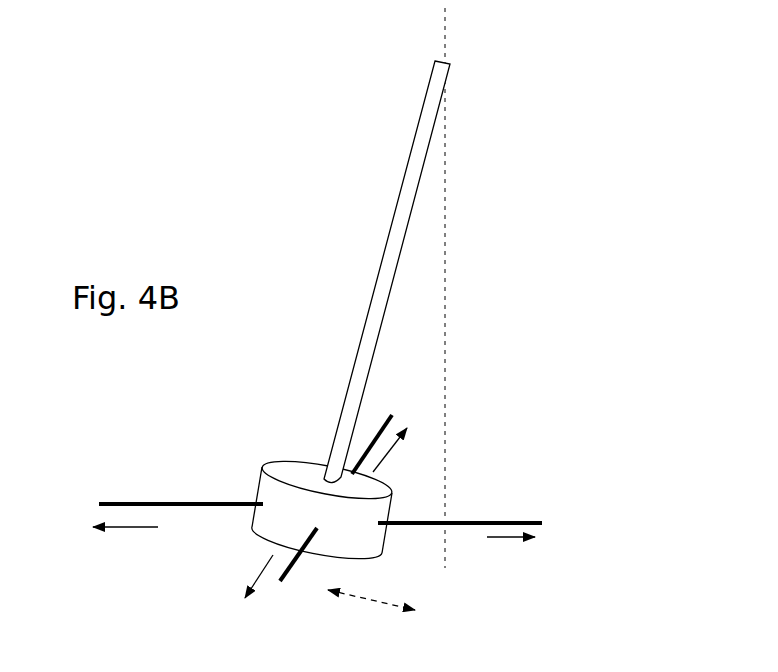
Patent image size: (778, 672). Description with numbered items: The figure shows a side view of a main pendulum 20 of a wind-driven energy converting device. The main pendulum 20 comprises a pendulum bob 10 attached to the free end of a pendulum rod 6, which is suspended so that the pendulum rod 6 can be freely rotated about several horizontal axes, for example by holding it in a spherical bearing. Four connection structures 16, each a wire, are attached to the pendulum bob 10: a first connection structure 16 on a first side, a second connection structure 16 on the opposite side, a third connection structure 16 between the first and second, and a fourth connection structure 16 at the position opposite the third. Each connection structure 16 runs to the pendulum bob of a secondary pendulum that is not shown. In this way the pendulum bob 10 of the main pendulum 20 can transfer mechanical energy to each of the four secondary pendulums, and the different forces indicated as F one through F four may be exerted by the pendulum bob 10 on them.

The main pendulum 20 is at (304, 206).
The pendulum rod 6 is at (399, 188).
The pendulum bob 10 is at (260, 490).
The connection structure 16 is at (117, 502).